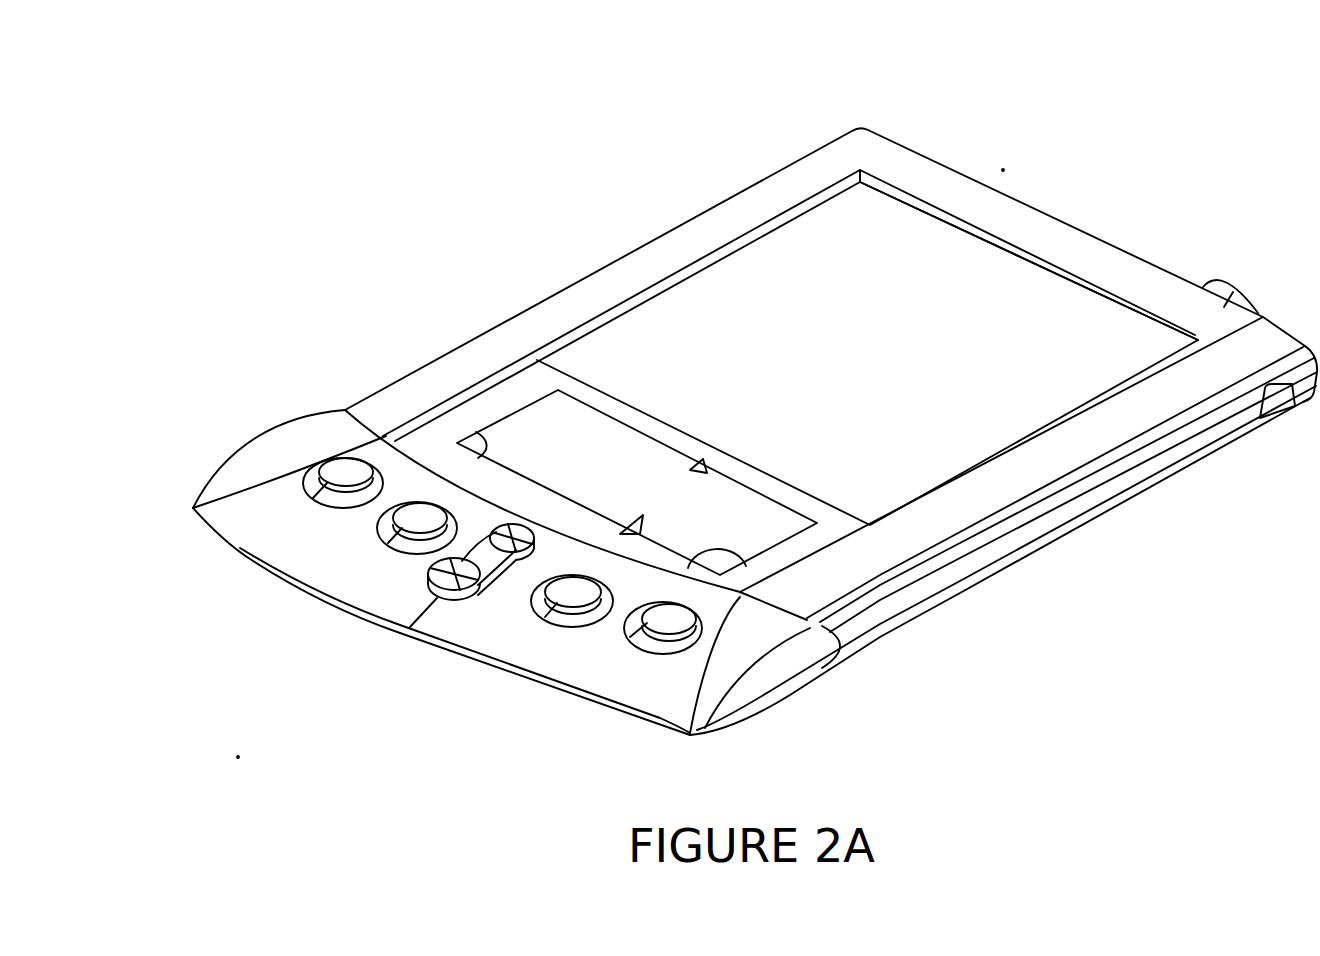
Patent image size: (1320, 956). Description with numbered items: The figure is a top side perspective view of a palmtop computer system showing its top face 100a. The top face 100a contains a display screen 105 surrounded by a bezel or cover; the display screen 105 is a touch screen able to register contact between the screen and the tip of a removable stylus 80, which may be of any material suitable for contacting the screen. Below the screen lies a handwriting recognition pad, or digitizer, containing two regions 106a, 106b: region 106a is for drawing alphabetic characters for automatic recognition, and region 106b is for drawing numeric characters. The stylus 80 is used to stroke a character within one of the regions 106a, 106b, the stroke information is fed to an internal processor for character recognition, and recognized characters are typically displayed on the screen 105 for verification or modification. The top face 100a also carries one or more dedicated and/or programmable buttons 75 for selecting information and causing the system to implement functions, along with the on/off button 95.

The top face 100a is at (222, 79).
The buttons 75 is at (332, 465).
The stylus 80 is at (1000, 548).
The on/off button 95 is at (1224, 284).
The display screen 105 is at (879, 262).
The region for alphabetic characters 106a is at (595, 463).
The region for numeric characters 106b is at (745, 536).